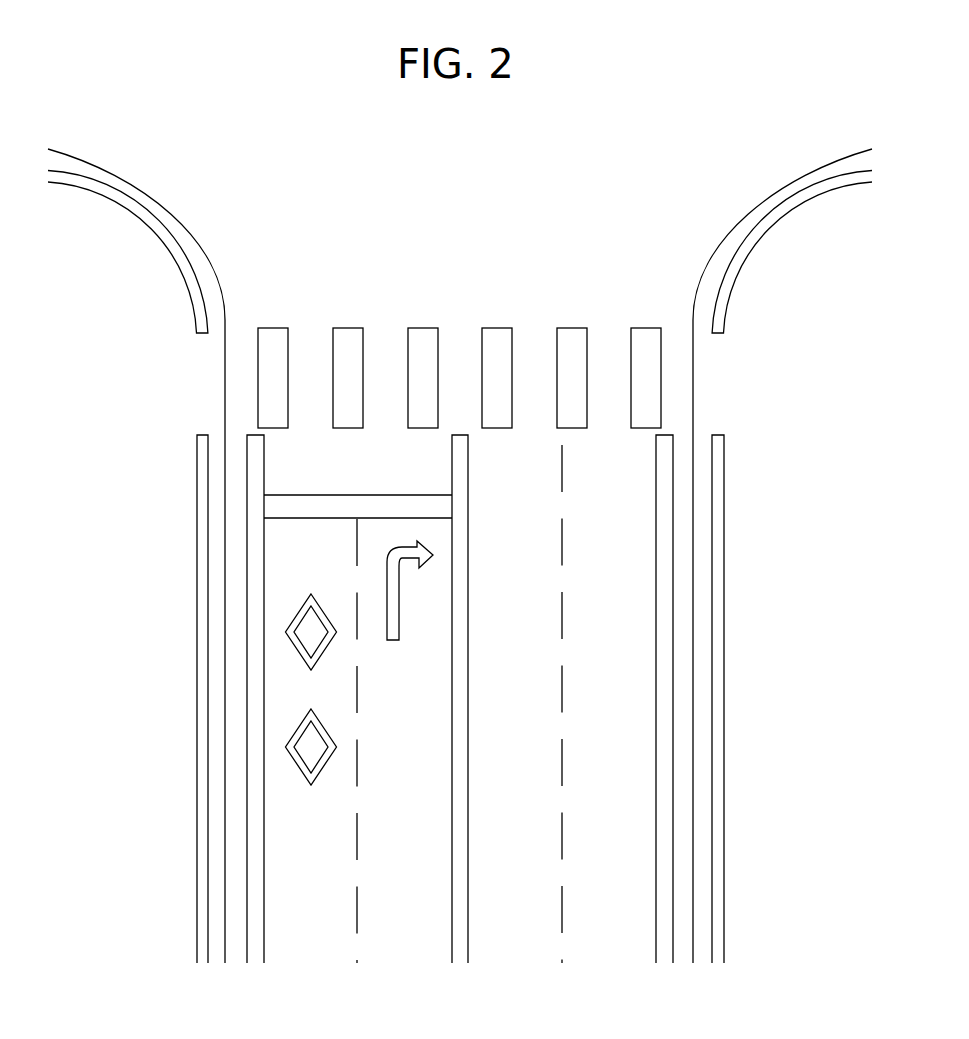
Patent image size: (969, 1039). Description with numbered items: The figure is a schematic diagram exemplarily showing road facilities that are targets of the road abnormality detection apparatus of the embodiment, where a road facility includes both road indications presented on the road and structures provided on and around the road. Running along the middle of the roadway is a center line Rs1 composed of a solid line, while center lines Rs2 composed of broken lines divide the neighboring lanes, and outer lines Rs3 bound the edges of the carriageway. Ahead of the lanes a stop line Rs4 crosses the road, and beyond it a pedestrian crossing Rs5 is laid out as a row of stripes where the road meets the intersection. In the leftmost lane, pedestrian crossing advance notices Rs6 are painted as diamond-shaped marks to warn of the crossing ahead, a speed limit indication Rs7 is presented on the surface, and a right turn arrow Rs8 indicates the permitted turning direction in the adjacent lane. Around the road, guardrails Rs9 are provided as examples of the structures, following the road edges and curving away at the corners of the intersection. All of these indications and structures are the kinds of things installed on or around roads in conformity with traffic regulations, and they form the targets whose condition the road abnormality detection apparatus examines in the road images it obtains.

The center line Rs1 is at (468, 651).
The center lines Rs2 is at (357, 693).
The outer lines Rs3 is at (264, 930).
The stop line Rs4 is at (306, 494).
The pedestrian crossing Rs5 is at (661, 368).
The pedestrian crossing advance notices Rs6 is at (329, 607).
The speed limit indication Rs7 is at (332, 843).
The right turn arrow Rs8 is at (399, 595).
The guardrails Rs9 is at (157, 234).